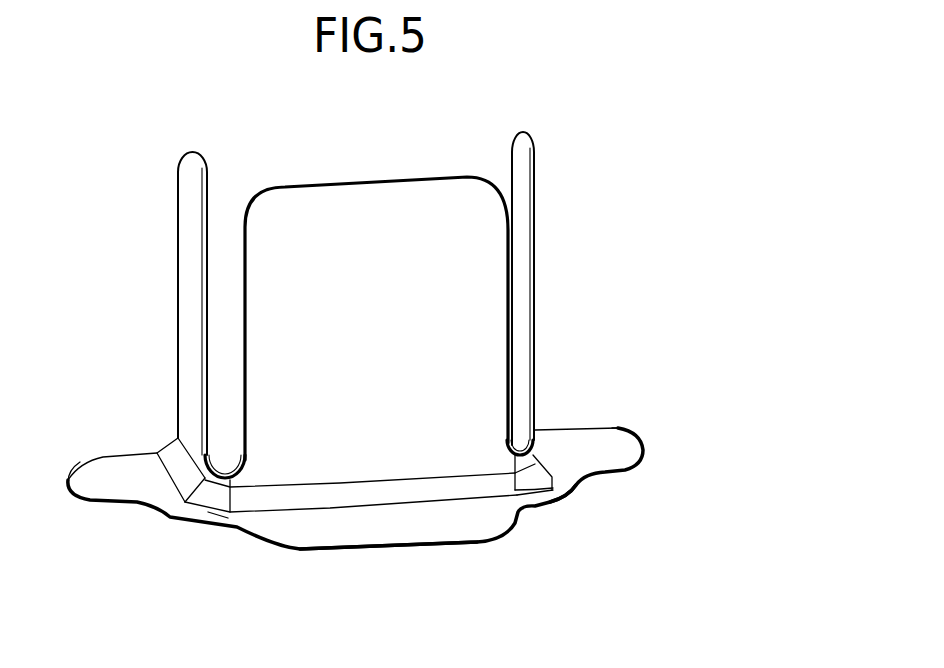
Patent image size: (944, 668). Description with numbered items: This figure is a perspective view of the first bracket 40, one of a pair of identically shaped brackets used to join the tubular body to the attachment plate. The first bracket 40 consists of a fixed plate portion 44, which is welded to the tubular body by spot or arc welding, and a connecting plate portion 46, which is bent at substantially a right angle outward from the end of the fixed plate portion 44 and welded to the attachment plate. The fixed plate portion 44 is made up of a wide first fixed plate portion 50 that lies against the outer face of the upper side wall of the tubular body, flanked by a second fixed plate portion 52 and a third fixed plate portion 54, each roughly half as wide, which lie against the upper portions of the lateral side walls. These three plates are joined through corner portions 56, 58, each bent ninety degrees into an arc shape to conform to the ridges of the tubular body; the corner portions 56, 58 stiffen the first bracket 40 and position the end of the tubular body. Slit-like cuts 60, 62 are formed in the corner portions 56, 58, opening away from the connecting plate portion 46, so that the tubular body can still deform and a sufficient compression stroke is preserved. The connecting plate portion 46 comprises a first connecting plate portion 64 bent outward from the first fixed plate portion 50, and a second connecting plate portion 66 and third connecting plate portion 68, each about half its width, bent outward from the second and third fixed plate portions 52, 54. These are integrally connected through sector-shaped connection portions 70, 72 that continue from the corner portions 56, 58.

The first bracket 40 is at (622, 160).
The fixed plate portion 44 is at (167, 283).
The connecting plate portion 46 is at (369, 511).
The first fixed plate portion 50 is at (388, 208).
The second fixed plate portion 52 is at (193, 292).
The third fixed plate portion 54 is at (527, 270).
The corner portion 56 is at (213, 482).
The corner portion 58 is at (530, 462).
The cut 60 is at (233, 463).
The cut 62 is at (523, 446).
The first connecting plate portion 64 is at (398, 522).
The second connecting plate portion 66 is at (95, 476).
The third connecting plate portion 68 is at (602, 452).
The sector-shaped connection portion 70 is at (213, 516).
The sector-shaped connection portion 72 is at (570, 495).